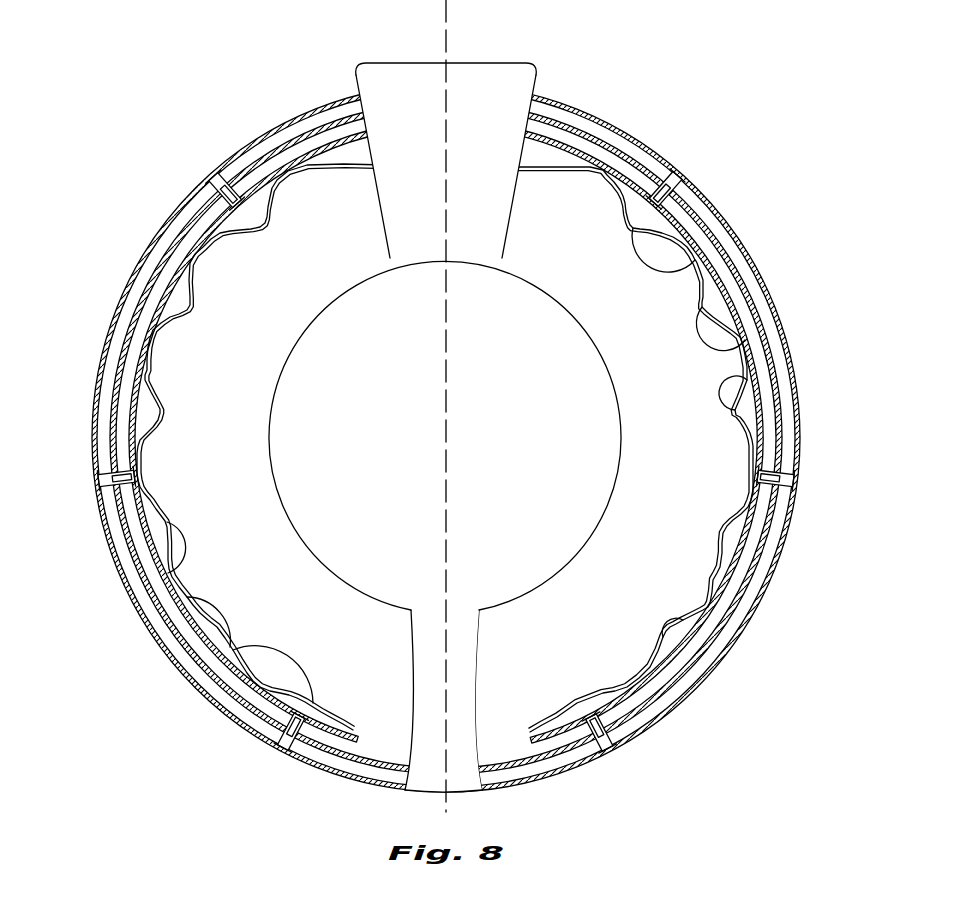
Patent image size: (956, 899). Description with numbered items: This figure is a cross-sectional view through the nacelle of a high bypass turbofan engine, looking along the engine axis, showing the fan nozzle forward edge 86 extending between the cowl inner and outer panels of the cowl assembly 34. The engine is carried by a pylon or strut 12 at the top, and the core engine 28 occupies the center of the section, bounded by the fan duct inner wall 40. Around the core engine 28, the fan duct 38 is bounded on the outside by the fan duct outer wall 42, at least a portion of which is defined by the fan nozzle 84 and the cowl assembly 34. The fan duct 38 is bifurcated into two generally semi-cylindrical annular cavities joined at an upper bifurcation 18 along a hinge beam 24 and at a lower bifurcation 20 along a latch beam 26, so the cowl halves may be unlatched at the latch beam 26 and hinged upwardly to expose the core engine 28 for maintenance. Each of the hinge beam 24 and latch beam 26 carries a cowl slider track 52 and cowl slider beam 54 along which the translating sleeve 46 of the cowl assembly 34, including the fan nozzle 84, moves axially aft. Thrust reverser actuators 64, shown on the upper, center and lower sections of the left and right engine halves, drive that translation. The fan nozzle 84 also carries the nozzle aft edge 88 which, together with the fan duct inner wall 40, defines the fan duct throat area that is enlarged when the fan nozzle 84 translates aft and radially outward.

The strut 12 is at (402, 58).
The upper bifurcation 18 is at (380, 187).
The lower bifurcation 20 is at (410, 668).
The hinge beam 24 is at (479, 72).
The latch beam 26 is at (420, 780).
The core engine 28 is at (445, 438).
The cowl assembly 34 is at (446, 401).
The translating sleeve 46 is at (205, 73).
The fan duct 38 is at (224, 296).
The fan duct inner wall 40 is at (570, 562).
The fan duct outer wall 42 is at (684, 632).
The cowl slider track 52 is at (541, 433).
The cowl slider beam 54 is at (508, 86).
The thrust reverser actuator 64 is at (217, 180).
The fan nozzle 84 is at (429, 438).
The nozzle forward edge 86 is at (128, 352).
The nozzle aft edge 88 is at (172, 560).